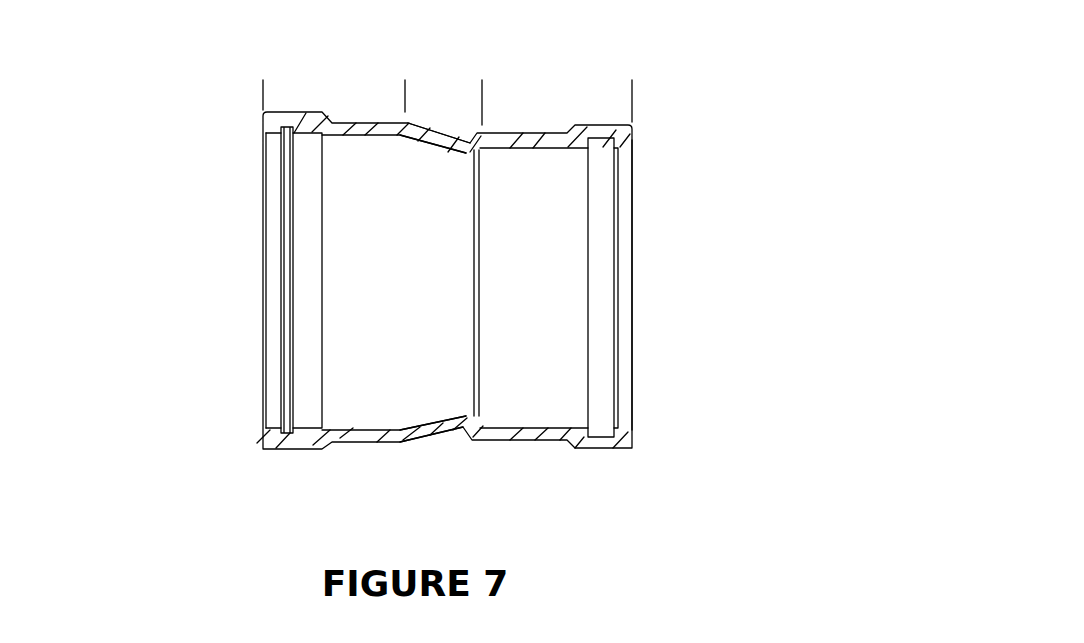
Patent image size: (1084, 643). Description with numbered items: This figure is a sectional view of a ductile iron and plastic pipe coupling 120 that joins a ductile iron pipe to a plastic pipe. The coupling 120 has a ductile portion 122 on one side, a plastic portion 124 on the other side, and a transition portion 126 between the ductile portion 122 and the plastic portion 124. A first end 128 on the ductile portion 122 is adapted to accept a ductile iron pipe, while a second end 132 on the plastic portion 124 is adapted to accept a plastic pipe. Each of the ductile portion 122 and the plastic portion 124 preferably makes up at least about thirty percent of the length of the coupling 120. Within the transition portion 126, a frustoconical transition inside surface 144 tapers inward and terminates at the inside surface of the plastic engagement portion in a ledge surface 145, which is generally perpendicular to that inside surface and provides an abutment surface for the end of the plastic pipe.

The ductile iron and plastic pipe coupling 120 is at (636, 76).
The ductile portion 122 is at (263, 98).
The plastic portion 124 is at (632, 98).
The transition portion 126 is at (482, 98).
The first end 128 is at (233, 311).
The second end 132 is at (682, 245).
The frustoconical transition inside surface 144 is at (436, 148).
The ledge surface 145 is at (484, 153).